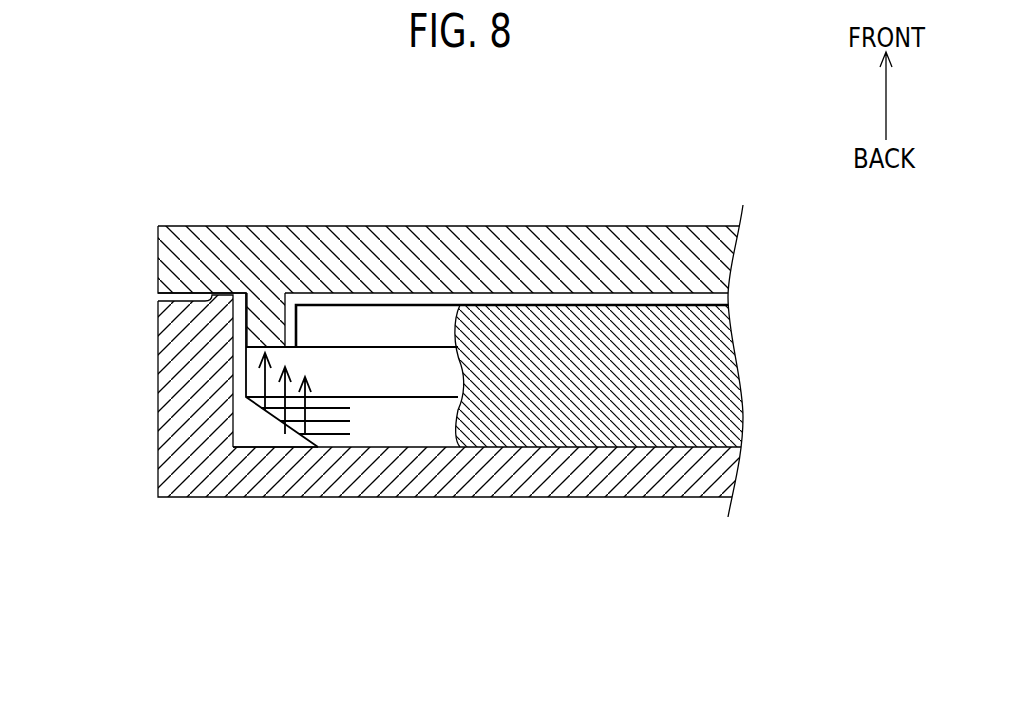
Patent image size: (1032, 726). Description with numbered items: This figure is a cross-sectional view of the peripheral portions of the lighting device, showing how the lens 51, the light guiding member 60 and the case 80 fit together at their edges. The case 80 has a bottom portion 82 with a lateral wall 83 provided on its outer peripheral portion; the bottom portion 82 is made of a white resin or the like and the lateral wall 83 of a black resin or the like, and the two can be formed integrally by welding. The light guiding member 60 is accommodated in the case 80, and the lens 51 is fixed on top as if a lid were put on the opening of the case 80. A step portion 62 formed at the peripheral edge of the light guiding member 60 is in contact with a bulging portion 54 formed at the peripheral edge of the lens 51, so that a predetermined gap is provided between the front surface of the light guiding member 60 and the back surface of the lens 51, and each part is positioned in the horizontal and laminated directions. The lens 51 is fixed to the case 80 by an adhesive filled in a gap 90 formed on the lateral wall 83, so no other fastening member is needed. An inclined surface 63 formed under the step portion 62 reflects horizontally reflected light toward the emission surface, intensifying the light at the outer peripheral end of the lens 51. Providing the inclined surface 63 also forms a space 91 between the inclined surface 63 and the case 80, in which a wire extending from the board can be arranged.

The lens 51 is at (526, 212).
The bulging portion 54 is at (250, 323).
The light guiding member 60 is at (607, 370).
The step portion 62 is at (271, 331).
The inclined surface 63 is at (379, 425).
The case 80 is at (396, 441).
The bottom portion 82 is at (600, 470).
The lateral wall 83 is at (176, 381).
The gap 90 is at (136, 302).
The space 91 is at (270, 438).